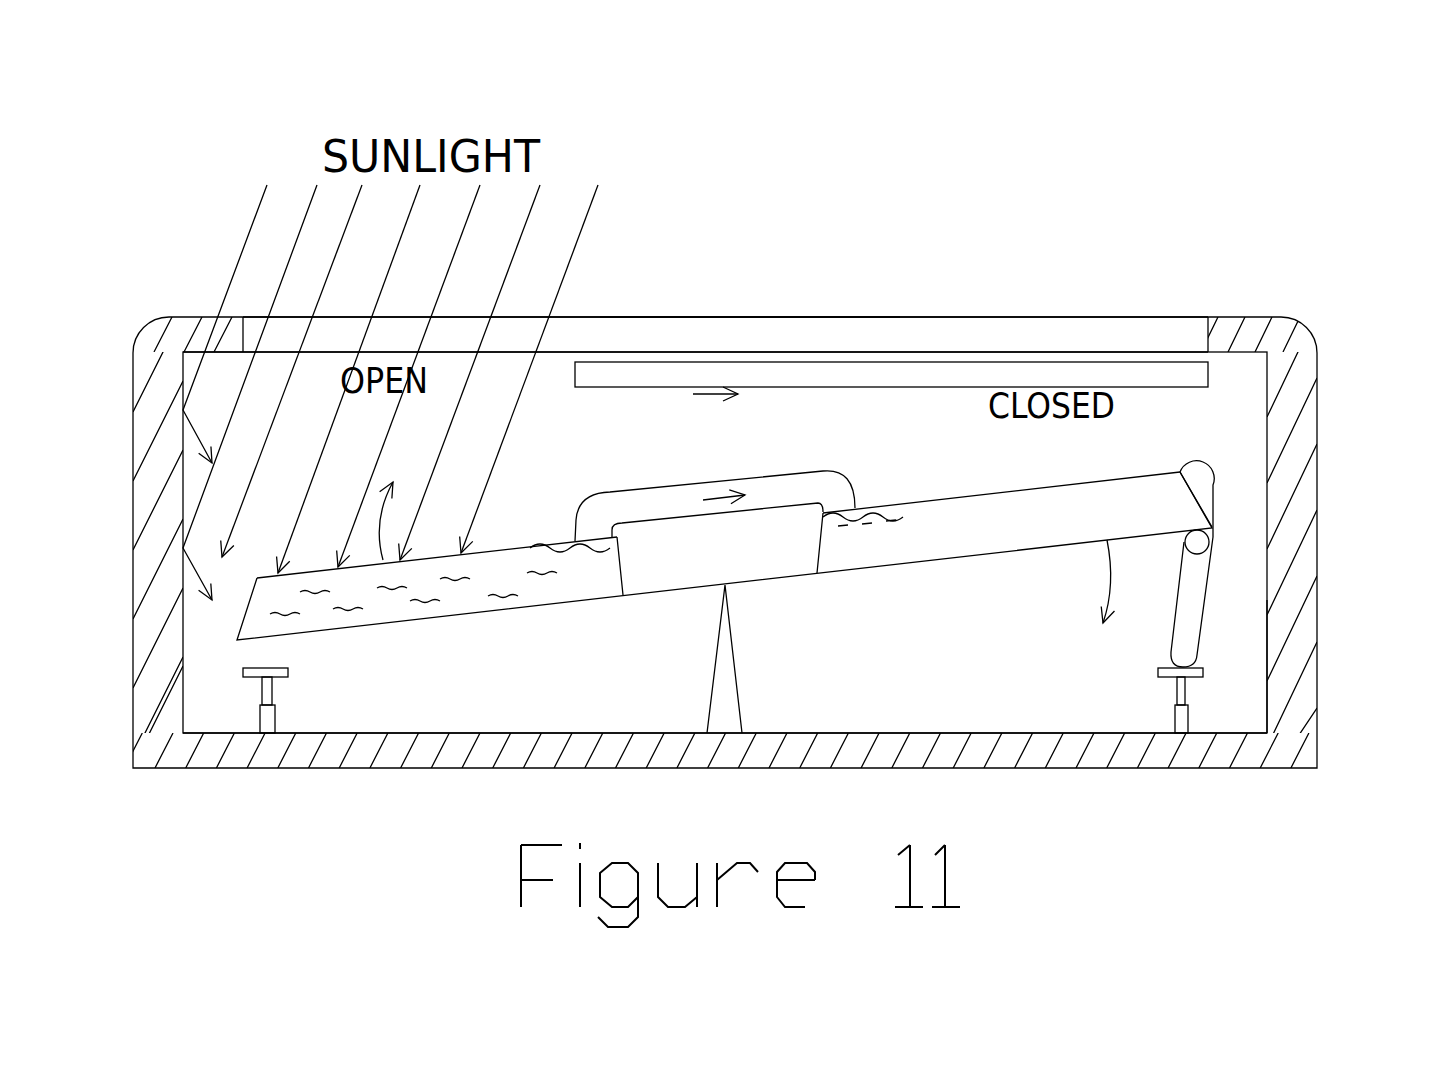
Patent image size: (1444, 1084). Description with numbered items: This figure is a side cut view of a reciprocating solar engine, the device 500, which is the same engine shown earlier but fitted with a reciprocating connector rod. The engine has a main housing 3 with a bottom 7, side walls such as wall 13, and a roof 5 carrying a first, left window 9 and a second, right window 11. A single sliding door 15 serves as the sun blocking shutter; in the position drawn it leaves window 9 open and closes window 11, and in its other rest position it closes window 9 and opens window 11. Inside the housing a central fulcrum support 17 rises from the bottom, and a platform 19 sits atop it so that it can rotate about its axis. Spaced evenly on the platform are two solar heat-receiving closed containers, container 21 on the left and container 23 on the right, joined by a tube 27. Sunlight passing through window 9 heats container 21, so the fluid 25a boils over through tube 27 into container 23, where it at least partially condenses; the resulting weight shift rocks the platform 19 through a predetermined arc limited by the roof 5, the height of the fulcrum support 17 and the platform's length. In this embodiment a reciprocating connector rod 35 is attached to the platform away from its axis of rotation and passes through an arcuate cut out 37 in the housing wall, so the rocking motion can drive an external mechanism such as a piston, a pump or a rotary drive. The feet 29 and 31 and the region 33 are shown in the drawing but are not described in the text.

The main housing 3 is at (1318, 581).
The roof 5 is at (728, 317).
The bottom 7 is at (858, 733).
The first (left) window 9 is at (516, 333).
The second (right) window 11 is at (1143, 333).
The wall 13 is at (200, 363).
The door 15 is at (897, 376).
The central fulcrum support 17 is at (733, 660).
The platform 19 is at (807, 573).
The solar heat-receiving closed container 21 is at (522, 547).
The solar heat-receiving closed container 23 is at (905, 507).
The fluid 25a is at (460, 593).
The tube 27 is at (628, 512).
The left support 29 is at (272, 690).
The right support 31 is at (1178, 688).
The chamber 33 is at (1228, 668).
The reciprocating connector rod 35 is at (1202, 541).
The arcuate cut out 37 is at (1190, 598).
The device 500 is at (998, 253).